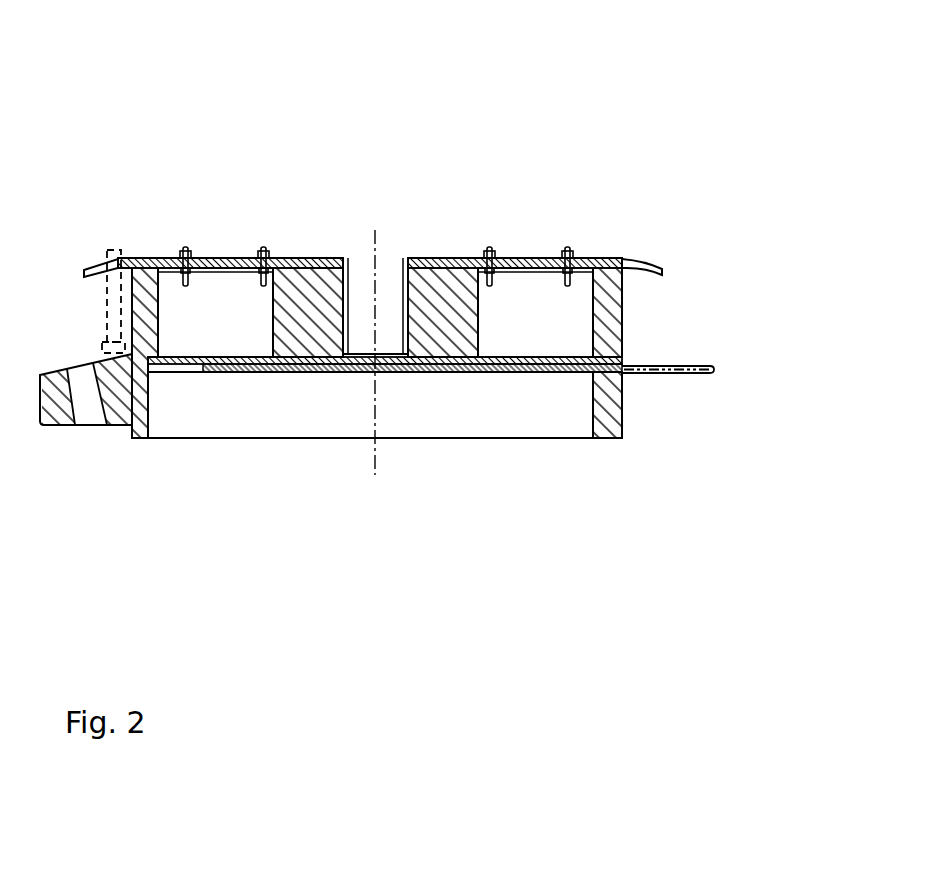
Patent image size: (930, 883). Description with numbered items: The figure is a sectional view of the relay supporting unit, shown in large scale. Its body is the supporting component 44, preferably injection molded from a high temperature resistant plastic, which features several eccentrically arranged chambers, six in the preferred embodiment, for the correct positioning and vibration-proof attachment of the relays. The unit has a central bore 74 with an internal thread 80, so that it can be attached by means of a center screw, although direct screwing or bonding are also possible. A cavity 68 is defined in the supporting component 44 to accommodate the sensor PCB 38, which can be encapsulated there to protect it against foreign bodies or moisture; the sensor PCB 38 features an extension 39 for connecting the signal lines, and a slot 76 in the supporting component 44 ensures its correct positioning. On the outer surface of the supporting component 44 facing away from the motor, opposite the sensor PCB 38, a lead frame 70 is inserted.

The internal thread 80 is at (332, 262).
The central bore 74 is at (386, 290).
The lead frame 70 is at (513, 260).
The supporting component 44 is at (617, 260).
The slot 76 is at (623, 367).
The extension 39 is at (693, 373).
The cavity 68 is at (322, 417).
The sensor PCB 38 is at (503, 372).